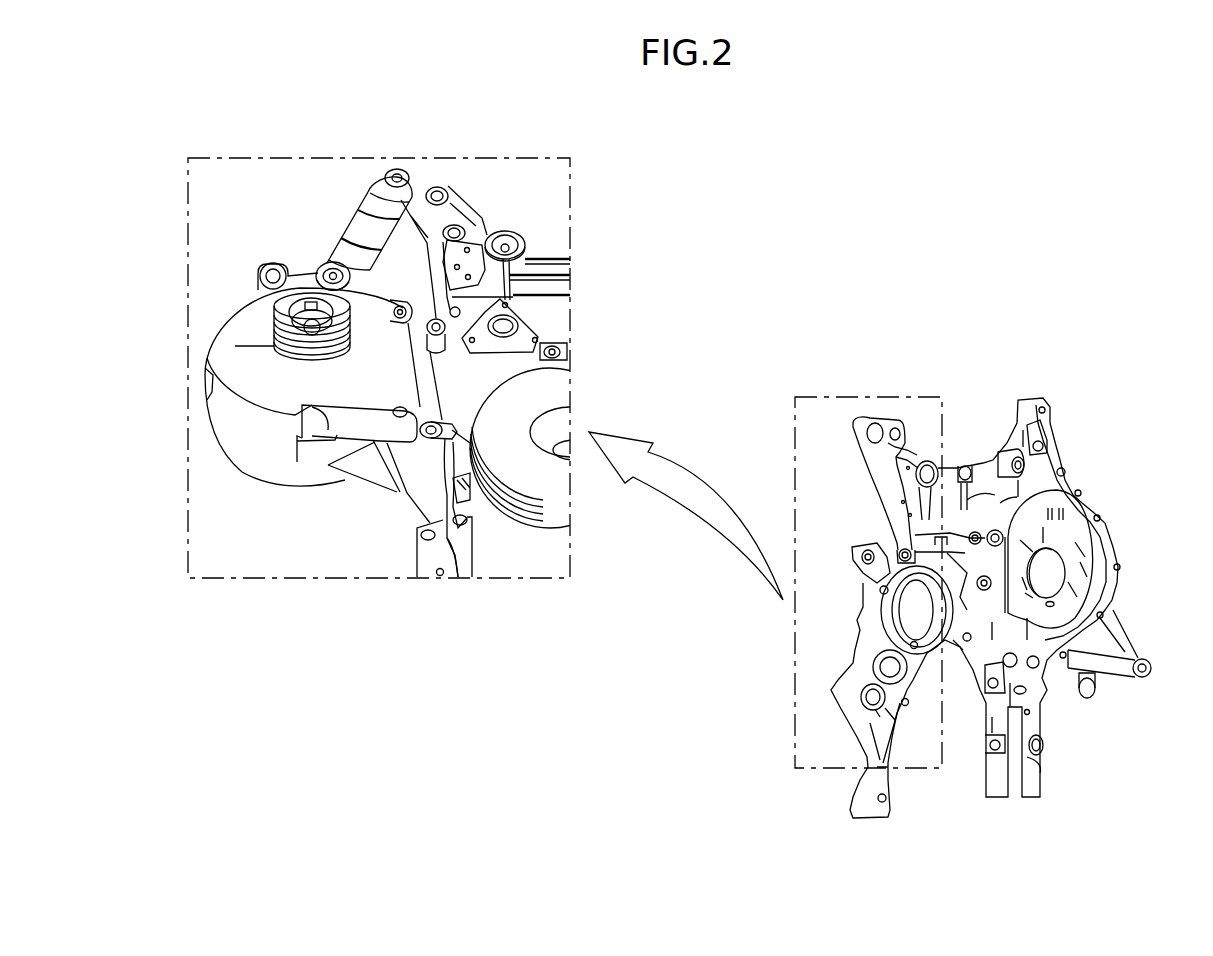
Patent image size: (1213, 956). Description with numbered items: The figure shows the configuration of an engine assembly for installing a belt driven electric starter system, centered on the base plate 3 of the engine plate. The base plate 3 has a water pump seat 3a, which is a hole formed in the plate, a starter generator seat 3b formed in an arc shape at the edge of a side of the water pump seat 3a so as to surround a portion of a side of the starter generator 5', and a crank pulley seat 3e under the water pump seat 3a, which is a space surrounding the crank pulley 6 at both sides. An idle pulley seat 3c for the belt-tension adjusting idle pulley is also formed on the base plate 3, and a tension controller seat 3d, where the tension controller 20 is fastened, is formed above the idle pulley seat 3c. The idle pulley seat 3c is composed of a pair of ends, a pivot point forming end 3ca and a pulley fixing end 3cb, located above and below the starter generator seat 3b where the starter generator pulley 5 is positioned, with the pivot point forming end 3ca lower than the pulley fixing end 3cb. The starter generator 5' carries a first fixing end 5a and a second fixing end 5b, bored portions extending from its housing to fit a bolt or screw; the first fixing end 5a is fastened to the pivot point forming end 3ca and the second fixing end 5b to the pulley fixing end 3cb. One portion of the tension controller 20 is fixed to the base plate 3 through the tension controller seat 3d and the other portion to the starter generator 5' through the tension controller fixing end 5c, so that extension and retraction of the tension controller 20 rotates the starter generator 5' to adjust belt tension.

The base plate 3 is at (477, 267).
The water pump seat 3a is at (930, 610).
The starter generator seat 3b is at (433, 342).
The idle pulley seat 3c is at (418, 203).
The pivot point forming end 3ca is at (428, 422).
The pulley fixing end 3cb is at (437, 326).
The tension controller seat 3d is at (877, 432).
The crank pulley seat 3e is at (505, 539).
The starter generator pulley 5 is at (246, 266).
The starter generator 5' is at (281, 387).
The first fixing end 5a is at (395, 415).
The second fixing end 5b is at (398, 316).
The tension controller fixing end 5c is at (300, 268).
The crank pulley 6 is at (547, 394).
The tension controller 20 is at (365, 223).